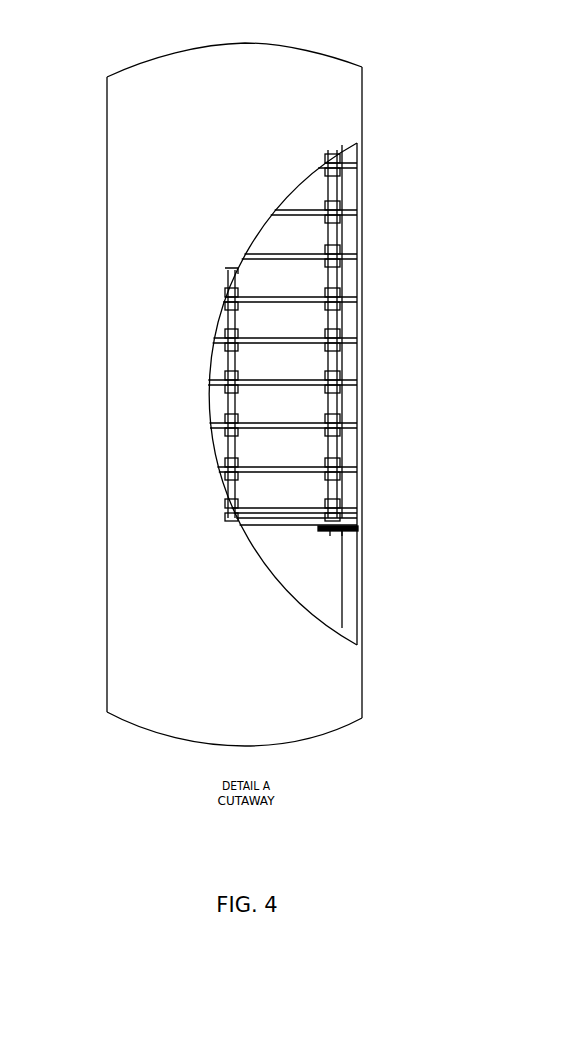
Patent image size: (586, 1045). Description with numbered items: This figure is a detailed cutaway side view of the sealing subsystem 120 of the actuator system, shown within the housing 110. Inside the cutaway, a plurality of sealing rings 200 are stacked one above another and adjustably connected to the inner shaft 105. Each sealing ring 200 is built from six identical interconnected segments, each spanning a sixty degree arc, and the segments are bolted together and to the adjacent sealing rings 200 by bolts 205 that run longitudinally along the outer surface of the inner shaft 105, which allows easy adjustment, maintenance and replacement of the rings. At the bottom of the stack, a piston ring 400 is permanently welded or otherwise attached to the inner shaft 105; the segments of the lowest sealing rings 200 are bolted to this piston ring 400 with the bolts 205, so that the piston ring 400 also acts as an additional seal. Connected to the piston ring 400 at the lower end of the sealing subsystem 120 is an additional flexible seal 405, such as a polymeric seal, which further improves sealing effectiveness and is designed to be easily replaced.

The enclosure housing 110 is at (256, 136).
The inner shaft 105 is at (341, 628).
The sealing subsystem 120 is at (433, 155).
The sealing rings 200 is at (310, 462).
The bolts 205 is at (341, 498).
The piston ring 400 is at (360, 522).
The flexible seal 405 is at (359, 538).